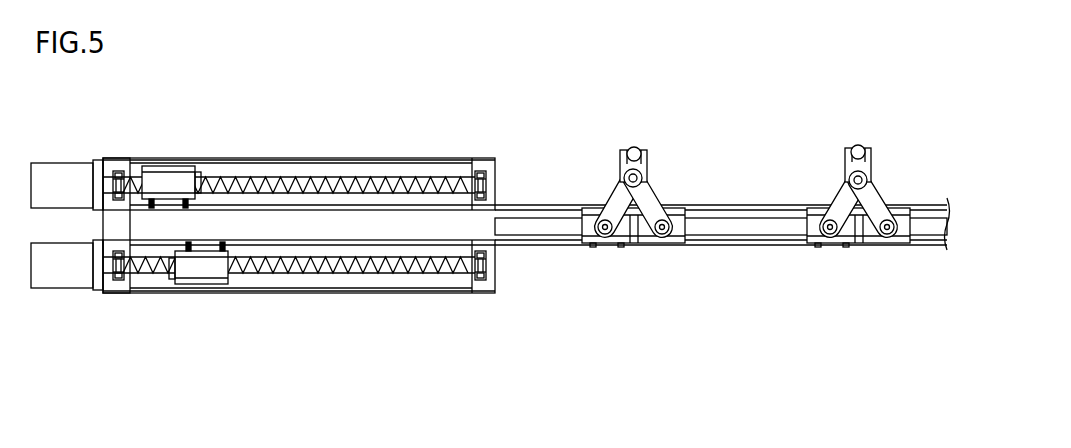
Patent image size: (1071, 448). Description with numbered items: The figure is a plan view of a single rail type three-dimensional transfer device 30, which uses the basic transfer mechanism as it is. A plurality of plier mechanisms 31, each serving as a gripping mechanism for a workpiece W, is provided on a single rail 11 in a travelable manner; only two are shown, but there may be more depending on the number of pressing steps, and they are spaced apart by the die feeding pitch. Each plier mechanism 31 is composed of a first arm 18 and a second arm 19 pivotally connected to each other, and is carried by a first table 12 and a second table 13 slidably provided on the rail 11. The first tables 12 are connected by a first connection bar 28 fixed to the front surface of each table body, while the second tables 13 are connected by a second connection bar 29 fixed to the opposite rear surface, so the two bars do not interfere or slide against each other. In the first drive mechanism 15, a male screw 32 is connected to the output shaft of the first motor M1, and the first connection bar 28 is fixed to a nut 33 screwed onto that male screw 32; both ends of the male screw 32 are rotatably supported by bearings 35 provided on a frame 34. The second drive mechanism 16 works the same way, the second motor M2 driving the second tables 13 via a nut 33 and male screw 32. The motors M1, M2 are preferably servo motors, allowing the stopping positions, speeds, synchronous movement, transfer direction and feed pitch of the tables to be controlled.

The rail 11 is at (557, 228).
The first table 12 is at (578, 228).
The second table 13 is at (688, 227).
The first drive mechanism 15 is at (403, 320).
The second drive mechanism 16 is at (175, 142).
The first arm 18 is at (620, 193).
The second arm 19 is at (647, 197).
The first connection bar 28 is at (323, 245).
The second connection bar 29 is at (307, 210).
The transfer device 30 is at (787, 108).
The plier mechanism 31 is at (638, 138).
The male screw 32 is at (232, 177).
The nut 33 is at (155, 166).
The frame 34 is at (308, 298).
The bearing 35 is at (118, 288).
The first motor M1 is at (65, 272).
The second motor M2 is at (65, 175).
The workpiece W is at (628, 148).